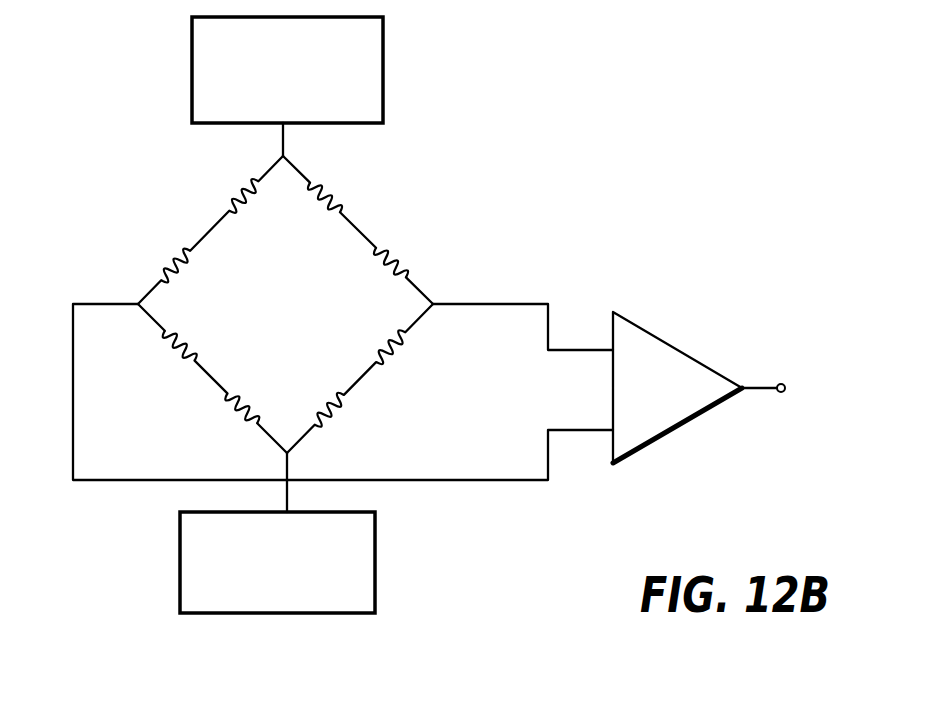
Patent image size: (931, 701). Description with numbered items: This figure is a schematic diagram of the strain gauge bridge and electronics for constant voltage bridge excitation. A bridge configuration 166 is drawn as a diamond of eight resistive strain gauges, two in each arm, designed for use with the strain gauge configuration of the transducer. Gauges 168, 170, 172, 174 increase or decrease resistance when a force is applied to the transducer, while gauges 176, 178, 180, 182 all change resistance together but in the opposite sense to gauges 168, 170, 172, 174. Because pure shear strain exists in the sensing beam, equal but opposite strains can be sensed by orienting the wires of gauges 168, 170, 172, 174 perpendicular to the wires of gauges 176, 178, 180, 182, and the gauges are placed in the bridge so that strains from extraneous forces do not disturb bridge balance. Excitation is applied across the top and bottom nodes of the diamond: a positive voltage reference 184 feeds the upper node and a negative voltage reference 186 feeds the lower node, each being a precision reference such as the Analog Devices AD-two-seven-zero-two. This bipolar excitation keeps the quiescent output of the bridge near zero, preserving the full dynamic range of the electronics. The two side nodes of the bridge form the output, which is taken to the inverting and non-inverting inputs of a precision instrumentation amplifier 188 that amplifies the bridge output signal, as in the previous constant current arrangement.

The bridge configuration 166 is at (493, 272).
The gauge 168 is at (233, 204).
The gauge 170 is at (400, 352).
The gauge 172 is at (166, 268).
The gauge 174 is at (338, 408).
The gauge 176 is at (335, 200).
The gauge 178 is at (178, 352).
The gauge 180 is at (400, 255).
The gauge 182 is at (240, 413).
The positive voltage reference 184 is at (382, 68).
The negative voltage reference 186 is at (366, 562).
The precision instrumentation amplifier 188 is at (658, 348).